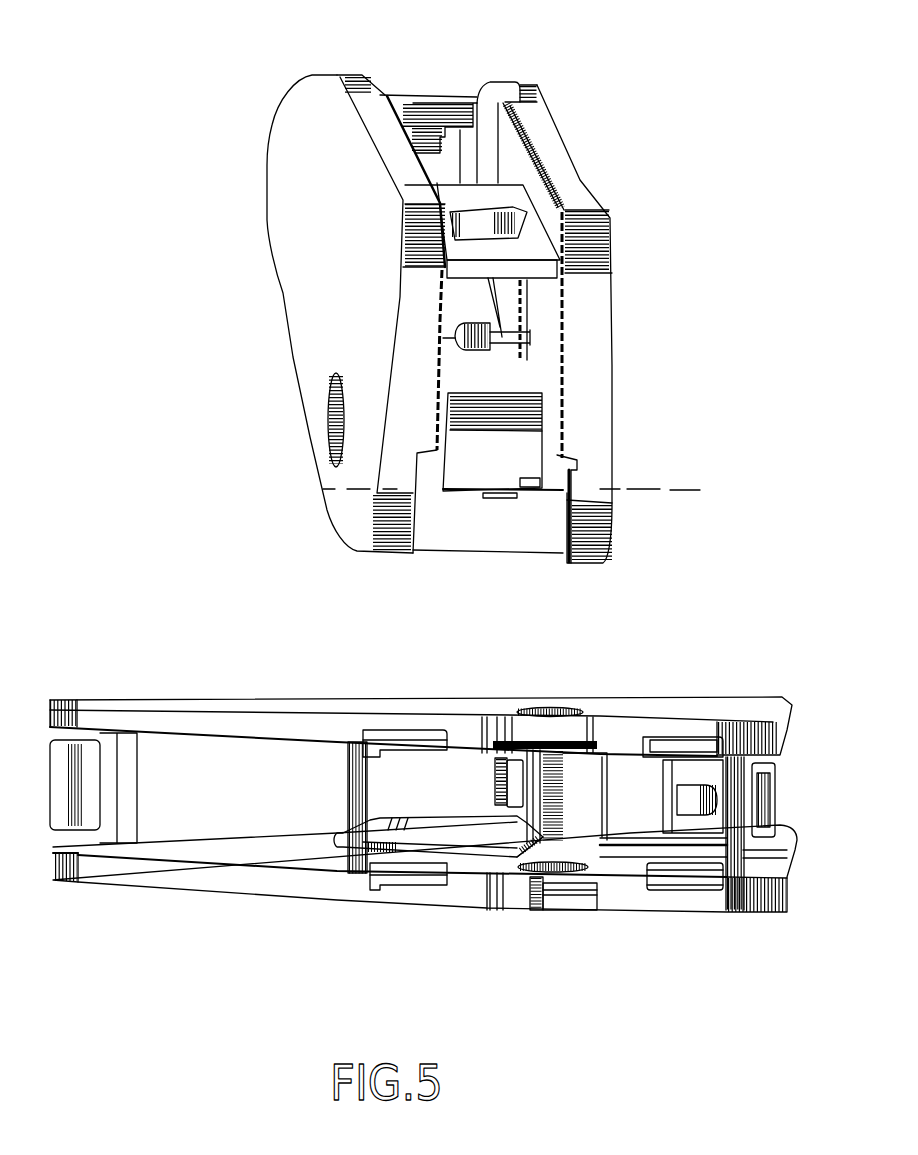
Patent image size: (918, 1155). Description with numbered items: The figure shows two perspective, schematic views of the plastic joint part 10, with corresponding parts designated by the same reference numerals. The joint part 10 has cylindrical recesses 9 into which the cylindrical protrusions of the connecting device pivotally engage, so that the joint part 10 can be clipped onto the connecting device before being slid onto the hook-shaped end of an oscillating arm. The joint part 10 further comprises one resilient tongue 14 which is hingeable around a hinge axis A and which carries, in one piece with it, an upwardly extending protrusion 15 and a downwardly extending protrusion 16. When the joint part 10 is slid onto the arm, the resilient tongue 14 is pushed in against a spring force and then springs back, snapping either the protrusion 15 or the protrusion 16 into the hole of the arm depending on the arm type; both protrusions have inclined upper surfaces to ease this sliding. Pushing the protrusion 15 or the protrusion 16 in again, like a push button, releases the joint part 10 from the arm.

The cylindrical recess 9 is at (330, 445).
The joint part 10 is at (313, 95).
The resilient tongue 14 is at (482, 460).
The upwardly extending protrusion 15 is at (480, 350).
The downwardly extending protrusion 16 is at (712, 822).